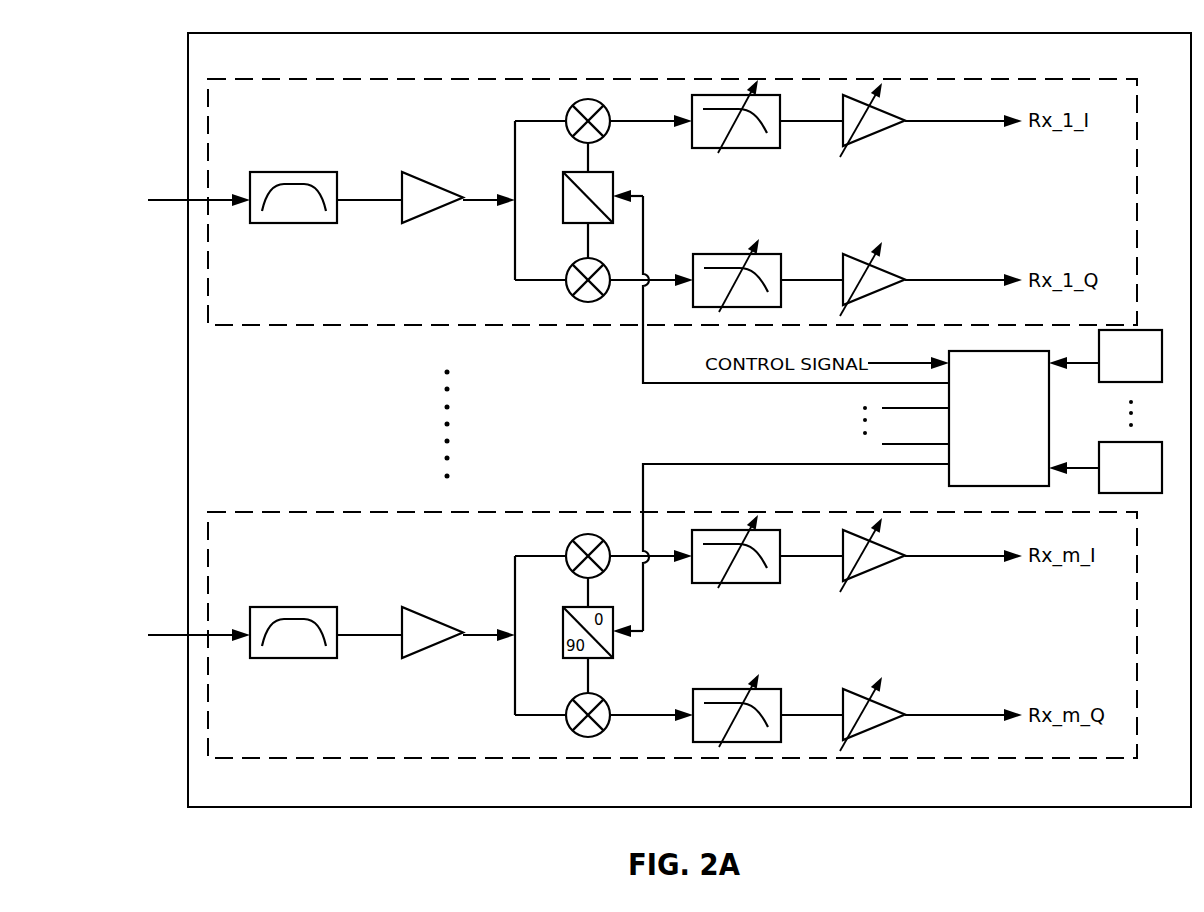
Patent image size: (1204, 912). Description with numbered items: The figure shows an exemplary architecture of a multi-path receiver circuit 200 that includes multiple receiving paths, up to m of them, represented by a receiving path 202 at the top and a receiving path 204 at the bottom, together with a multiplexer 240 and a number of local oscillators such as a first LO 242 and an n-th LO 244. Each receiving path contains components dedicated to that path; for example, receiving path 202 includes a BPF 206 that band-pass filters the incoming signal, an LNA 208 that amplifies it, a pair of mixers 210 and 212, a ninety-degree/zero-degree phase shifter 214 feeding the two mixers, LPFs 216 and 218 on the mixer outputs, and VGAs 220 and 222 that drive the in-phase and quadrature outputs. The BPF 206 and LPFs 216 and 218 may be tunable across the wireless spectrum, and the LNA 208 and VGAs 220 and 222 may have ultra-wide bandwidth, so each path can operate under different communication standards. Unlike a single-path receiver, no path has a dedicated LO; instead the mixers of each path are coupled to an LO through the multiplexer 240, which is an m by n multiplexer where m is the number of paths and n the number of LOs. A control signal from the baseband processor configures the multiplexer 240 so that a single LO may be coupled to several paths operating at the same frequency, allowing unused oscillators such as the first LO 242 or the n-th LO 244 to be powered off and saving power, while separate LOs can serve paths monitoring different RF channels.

The multi-path receiver circuit 200 is at (665, 840).
The receiving path 202 is at (216, 78).
The receiving path 204 is at (216, 512).
The BPF 206 is at (284, 172).
The LNA 208 is at (428, 172).
The mixer 210 is at (568, 108).
The mixer 212 is at (573, 296).
The 90°/0° phase shifter 214 is at (563, 205).
The LPF 216 is at (735, 148).
The LPF 218 is at (718, 255).
The VGA 220 is at (873, 135).
The VGA 222 is at (845, 255).
The multiplexer 240 is at (999, 418).
The LO_1 242 is at (1105, 356).
The LO_n 244 is at (1105, 467).